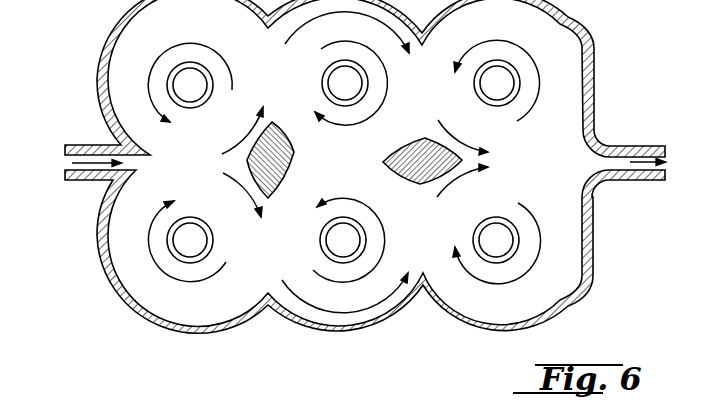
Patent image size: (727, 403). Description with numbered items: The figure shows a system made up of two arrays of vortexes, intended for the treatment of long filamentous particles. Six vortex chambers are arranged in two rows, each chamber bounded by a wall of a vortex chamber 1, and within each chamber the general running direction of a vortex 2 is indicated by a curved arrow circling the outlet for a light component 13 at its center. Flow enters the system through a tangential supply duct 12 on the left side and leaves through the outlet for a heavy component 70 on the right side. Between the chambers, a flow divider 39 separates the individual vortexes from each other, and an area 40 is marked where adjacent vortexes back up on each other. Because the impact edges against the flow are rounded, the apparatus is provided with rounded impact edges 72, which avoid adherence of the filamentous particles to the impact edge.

The wall of a vortex chamber 1 is at (199, 3).
The general running direction of a vortex 2 is at (352, 198).
The tangential supply duct 12 is at (89, 152).
The outlet for a light component 13 is at (194, 97).
The flow divider 39 is at (290, 152).
The area where adjacent vortexes back up on each other 40 is at (268, 80).
The outlet for a heavy component 70 is at (647, 152).
The rounded impact edge 72 is at (250, 160).